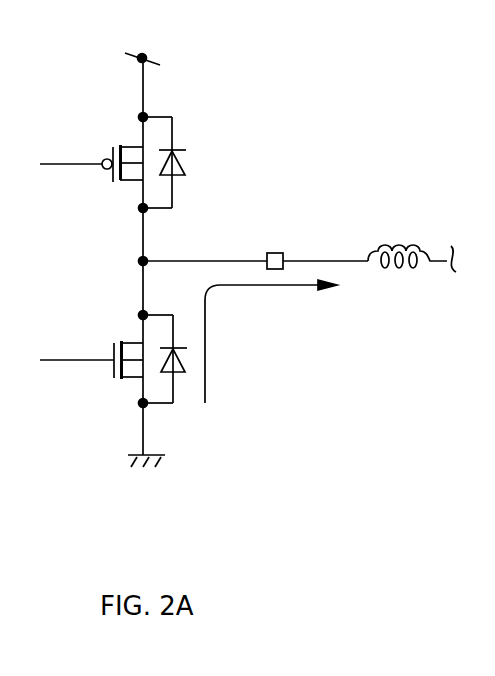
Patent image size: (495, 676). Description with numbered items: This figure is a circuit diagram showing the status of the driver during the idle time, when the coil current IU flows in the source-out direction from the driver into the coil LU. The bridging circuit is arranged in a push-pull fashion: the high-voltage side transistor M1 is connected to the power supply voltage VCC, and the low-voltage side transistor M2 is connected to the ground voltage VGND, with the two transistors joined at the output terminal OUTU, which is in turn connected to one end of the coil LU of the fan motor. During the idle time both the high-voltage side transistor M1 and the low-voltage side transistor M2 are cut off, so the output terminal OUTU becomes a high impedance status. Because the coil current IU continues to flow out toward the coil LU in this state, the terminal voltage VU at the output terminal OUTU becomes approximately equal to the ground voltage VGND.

The power supply voltage VCC is at (148, 40).
The high-voltage side transistor M1 is at (120, 187).
The terminal voltage VU is at (203, 245).
The output terminal OUTU is at (280, 252).
The coil LU is at (399, 243).
The coil current IU is at (271, 341).
The low-voltage side transistor M2 is at (120, 383).
The ground voltage VGND is at (148, 483).